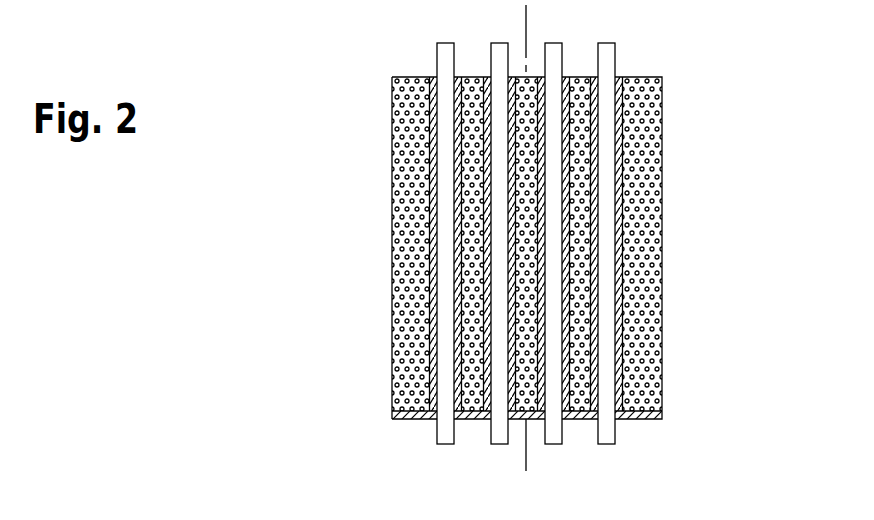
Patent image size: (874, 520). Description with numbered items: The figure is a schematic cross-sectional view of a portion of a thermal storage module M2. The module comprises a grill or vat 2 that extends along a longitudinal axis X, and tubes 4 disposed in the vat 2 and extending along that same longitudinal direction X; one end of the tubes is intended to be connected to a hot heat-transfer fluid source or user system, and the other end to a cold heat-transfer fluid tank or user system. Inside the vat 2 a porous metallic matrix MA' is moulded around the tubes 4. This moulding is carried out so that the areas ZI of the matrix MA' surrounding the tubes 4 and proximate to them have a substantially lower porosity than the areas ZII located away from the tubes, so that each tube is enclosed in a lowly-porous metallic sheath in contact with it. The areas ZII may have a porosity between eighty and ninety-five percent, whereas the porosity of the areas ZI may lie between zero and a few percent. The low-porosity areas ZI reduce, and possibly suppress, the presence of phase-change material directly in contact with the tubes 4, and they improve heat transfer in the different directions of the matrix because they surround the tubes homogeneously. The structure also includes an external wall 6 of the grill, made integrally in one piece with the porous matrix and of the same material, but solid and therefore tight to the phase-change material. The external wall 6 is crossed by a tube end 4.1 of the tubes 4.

The thermal storage module M2 is at (688, 105).
The vat 2 is at (662, 218).
The tubes 4 is at (617, 307).
The tube end 4.1 is at (615, 59).
The external wall 6 is at (407, 419).
The low-porosity areas ZI is at (453, 92).
The high-porosity areas ZII is at (410, 320).
The matrix MA' is at (356, 248).
The longitudinal axis X is at (526, 455).